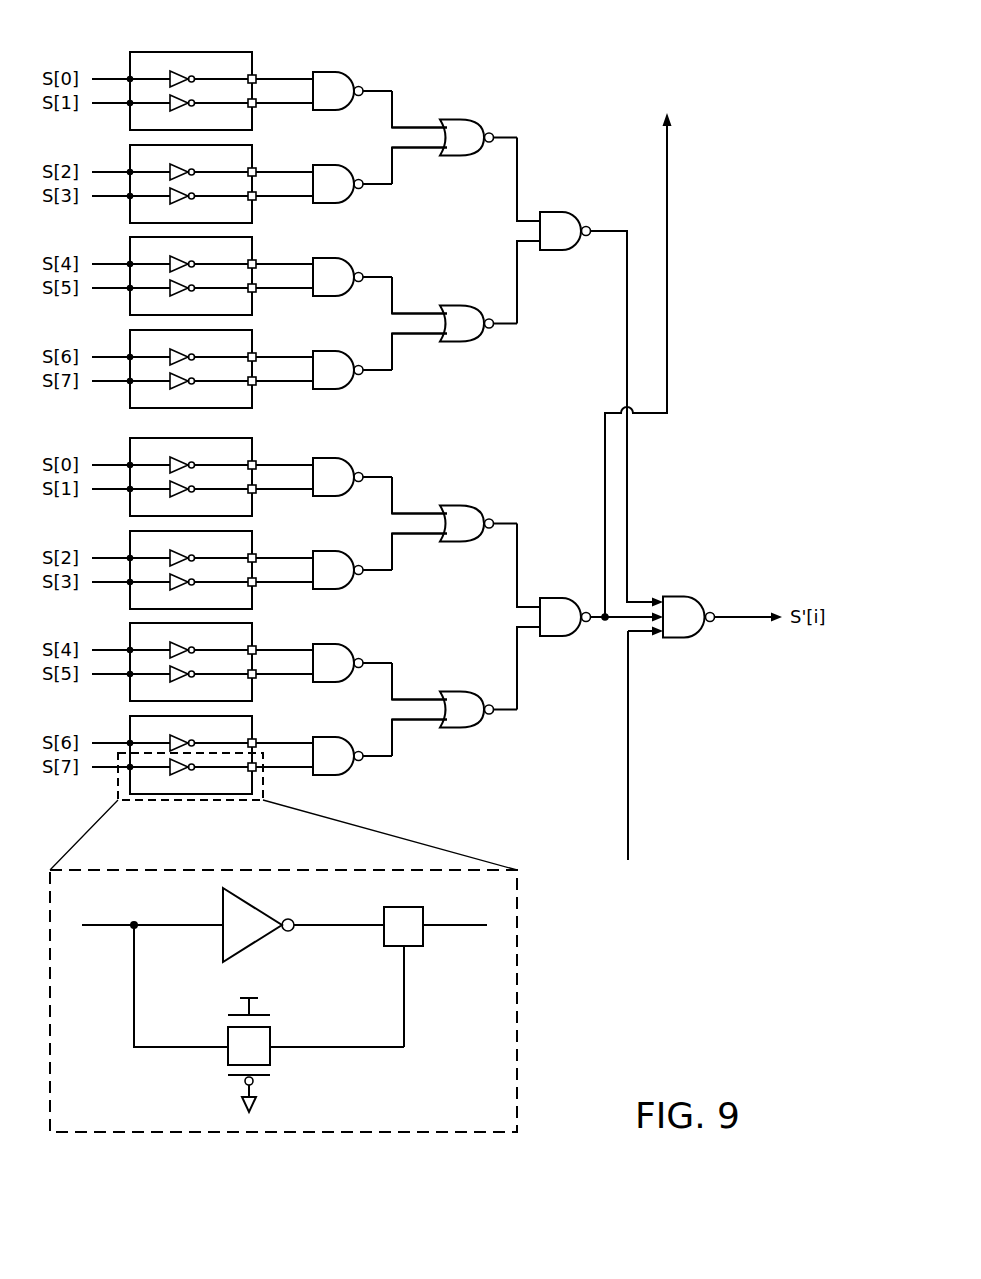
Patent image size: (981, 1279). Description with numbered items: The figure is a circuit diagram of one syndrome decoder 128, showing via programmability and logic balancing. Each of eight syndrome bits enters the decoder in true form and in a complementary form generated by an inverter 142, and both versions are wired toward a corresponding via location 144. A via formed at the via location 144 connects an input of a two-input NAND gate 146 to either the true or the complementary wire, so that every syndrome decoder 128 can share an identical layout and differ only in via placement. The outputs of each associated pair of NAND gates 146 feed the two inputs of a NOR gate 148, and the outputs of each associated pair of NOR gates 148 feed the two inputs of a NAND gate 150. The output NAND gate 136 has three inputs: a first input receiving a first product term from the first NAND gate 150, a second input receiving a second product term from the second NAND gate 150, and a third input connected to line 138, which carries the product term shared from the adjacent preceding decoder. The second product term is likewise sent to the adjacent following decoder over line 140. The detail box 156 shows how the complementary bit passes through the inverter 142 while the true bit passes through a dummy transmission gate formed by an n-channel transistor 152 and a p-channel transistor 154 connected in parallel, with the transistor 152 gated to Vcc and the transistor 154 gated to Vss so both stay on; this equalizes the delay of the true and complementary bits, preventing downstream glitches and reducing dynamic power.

The syndrome decoder 128 is at (764, 66).
The logic NAND gate 136 is at (680, 598).
The line 138 is at (628, 760).
The line 140 is at (667, 315).
The inverter 142 is at (233, 508).
The via location 144 is at (367, 561).
The logic NAND gate 146 is at (351, 423).
The logic NOR gate 148 is at (454, 424).
The logic NAND gate 150 is at (564, 447).
The n-channel transistor 152 is at (279, 1018).
The p-channel transistor 154 is at (216, 1059).
The box 156 is at (517, 960).